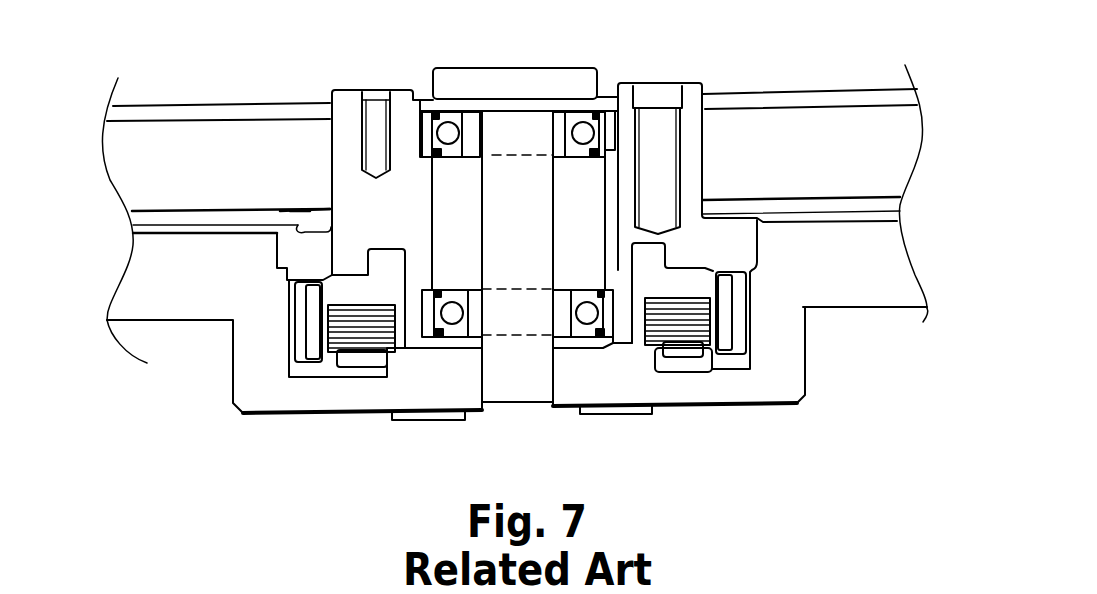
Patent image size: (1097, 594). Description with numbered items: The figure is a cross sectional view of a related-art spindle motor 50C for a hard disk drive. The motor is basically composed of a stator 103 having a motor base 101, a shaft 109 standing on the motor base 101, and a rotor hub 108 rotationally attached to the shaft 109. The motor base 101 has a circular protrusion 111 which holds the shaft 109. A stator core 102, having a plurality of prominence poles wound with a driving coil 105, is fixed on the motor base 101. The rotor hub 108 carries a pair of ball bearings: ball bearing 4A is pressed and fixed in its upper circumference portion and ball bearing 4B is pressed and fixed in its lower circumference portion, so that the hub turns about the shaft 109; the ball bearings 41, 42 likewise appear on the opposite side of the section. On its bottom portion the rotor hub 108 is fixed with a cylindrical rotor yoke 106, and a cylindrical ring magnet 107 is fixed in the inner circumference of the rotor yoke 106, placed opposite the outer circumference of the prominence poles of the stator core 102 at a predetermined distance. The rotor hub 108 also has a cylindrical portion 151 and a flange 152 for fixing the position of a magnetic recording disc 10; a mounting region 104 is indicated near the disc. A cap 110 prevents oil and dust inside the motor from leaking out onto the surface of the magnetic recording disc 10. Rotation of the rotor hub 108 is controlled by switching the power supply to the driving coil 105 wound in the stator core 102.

The magnetic recording disc 10 is at (150, 110).
The mounting portion 104 is at (314, 188).
The cylindrical portion 151 is at (321, 155).
The flange 152 is at (303, 212).
The stator 103 is at (196, 324).
The motor base 101 is at (260, 372).
The rotor hub 108 is at (351, 110).
The cap 110 is at (505, 67).
The shaft 109 is at (518, 405).
The bearing 41 is at (448, 143).
The ball bearing 4A is at (583, 143).
The bearing 42 is at (450, 298).
The ball bearing 4B is at (587, 292).
The circular protrusion 111 is at (573, 344).
The driving coil 105 is at (363, 358).
The stator core 102 is at (332, 354).
The rotor yoke 106 is at (740, 344).
The cylindrical ring magnet 107 is at (724, 344).
The spindle motor 50C is at (837, 29).